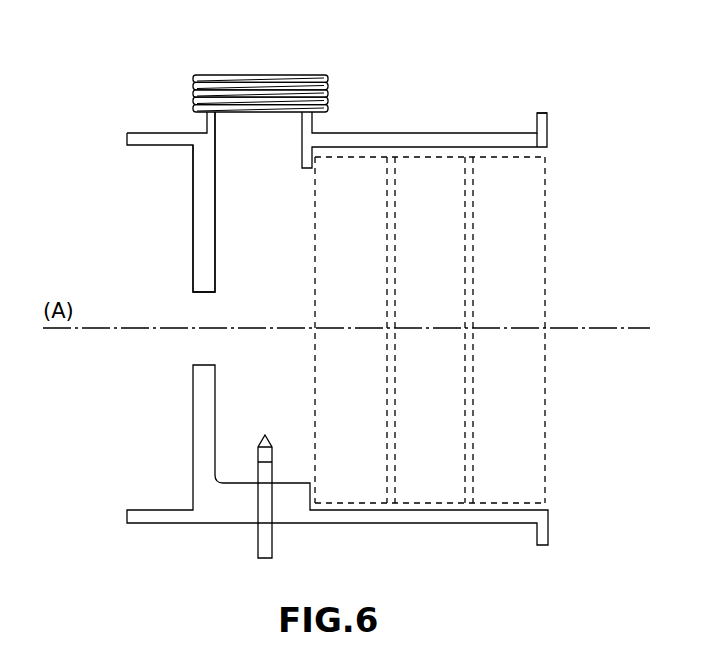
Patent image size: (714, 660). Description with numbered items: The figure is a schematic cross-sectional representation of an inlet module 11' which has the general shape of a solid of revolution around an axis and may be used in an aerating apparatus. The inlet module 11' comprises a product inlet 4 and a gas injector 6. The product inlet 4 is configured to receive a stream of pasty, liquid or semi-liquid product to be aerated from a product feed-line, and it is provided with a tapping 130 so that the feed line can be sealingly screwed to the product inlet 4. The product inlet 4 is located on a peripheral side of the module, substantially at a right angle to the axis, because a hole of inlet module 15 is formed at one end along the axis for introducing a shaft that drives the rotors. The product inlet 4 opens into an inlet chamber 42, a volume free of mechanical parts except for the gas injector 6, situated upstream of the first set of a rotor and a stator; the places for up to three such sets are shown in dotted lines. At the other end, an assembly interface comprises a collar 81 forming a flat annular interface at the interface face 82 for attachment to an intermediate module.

The product inlet 4 is at (293, 69).
The tapping 130 is at (328, 77).
The inlet module 11' is at (365, 266).
The collar 81 is at (548, 115).
The interface face 82 is at (548, 130).
The inlet chamber 42 is at (238, 203).
The hole of inlet module 15 is at (208, 348).
The gas injector 6 is at (267, 551).